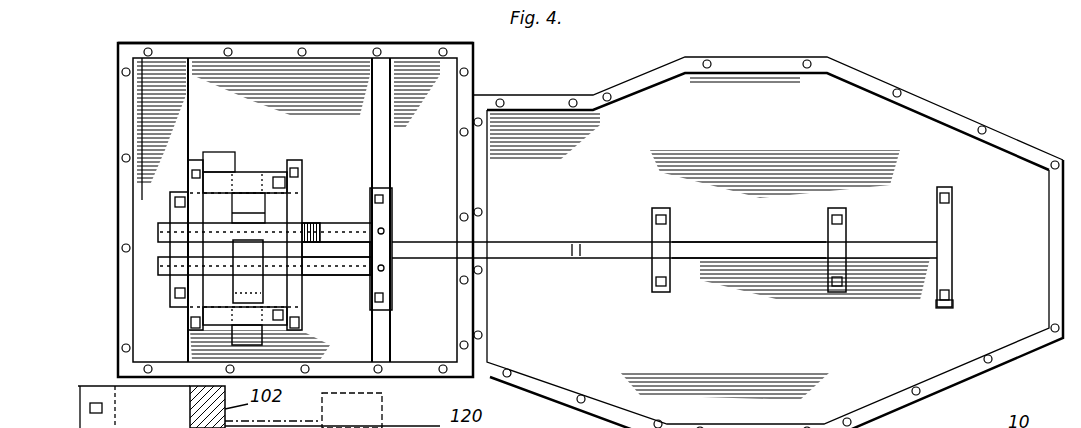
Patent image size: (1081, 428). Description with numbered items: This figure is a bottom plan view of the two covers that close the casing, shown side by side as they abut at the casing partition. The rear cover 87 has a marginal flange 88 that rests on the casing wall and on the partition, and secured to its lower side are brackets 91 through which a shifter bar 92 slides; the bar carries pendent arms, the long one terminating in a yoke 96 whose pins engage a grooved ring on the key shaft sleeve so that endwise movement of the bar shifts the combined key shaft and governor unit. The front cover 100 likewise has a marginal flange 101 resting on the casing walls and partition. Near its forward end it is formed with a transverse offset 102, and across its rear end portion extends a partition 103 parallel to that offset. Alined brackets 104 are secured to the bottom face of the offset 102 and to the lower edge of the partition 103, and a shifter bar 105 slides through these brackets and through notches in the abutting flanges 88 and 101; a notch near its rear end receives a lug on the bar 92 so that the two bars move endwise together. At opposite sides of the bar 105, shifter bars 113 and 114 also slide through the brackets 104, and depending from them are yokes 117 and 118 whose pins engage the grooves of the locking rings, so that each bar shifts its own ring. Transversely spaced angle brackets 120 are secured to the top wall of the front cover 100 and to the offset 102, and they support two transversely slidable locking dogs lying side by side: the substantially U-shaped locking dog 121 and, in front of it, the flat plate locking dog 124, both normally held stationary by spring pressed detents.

The front cover 100 is at (315, 75).
The marginal flange 101 is at (417, 48).
The transverse offset 102 is at (185, 78).
The partition 103 is at (392, 162).
The alined brackets 104 is at (390, 192).
The shifter bar 105 is at (418, 247).
The shifter bar 113 is at (332, 233).
The shifter bar 114 is at (360, 278).
The yoke 117 is at (298, 202).
The yoke 118 is at (198, 165).
The angle brackets 120 is at (275, 180).
The locking dog 121 is at (252, 287).
The locking dog 124 is at (217, 208).
The rear cover 87 is at (710, 237).
The marginal flange 88 is at (1012, 143).
The brackets 91 is at (828, 262).
The shifter bar 92 is at (770, 240).
The yoke 96 is at (947, 225).